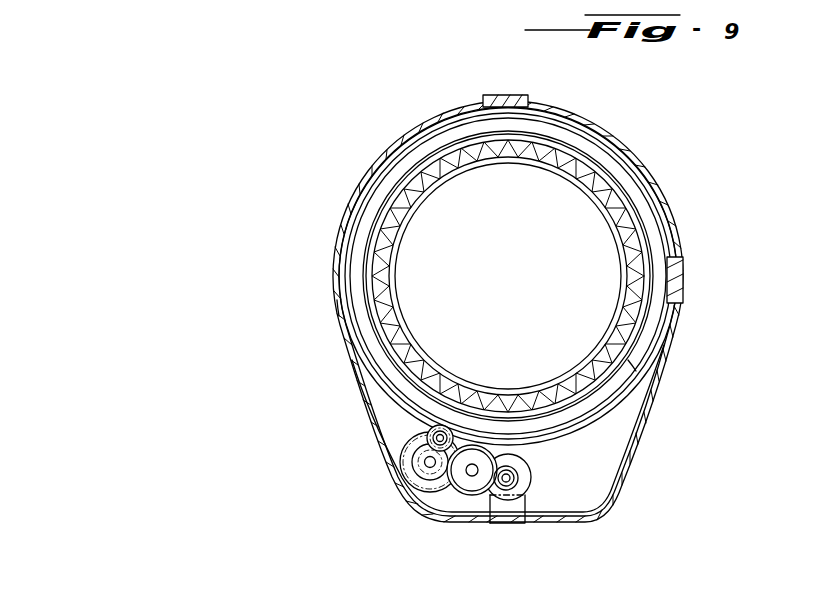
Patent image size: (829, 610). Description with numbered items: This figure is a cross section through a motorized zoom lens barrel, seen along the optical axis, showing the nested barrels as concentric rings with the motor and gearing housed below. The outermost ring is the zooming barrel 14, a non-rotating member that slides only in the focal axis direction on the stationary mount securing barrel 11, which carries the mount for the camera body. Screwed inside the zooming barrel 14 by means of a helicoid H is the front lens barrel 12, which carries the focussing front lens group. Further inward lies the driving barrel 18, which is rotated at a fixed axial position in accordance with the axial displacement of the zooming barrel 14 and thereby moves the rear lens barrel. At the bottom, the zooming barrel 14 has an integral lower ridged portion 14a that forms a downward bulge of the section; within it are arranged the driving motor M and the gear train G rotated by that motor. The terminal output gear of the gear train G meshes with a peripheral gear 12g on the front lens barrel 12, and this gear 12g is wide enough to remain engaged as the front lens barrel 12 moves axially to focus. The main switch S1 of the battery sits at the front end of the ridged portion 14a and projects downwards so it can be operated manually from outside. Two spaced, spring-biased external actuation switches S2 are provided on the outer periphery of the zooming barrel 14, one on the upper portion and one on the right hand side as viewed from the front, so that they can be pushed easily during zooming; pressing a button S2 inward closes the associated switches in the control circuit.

The zooming barrel 14 is at (609, 133).
The lower ridged portion 14a is at (594, 511).
The front lens barrel 12 is at (397, 380).
The peripheral gear 12g is at (333, 306).
The mount securing barrel 11 is at (623, 221).
The driving barrel 18 is at (602, 204).
The helicoid H is at (625, 358).
The external actuation switches S2 is at (512, 95).
The driving motor M is at (525, 495).
The gear mechanism (gear train) G is at (495, 494).
The main switch S1 is at (500, 497).